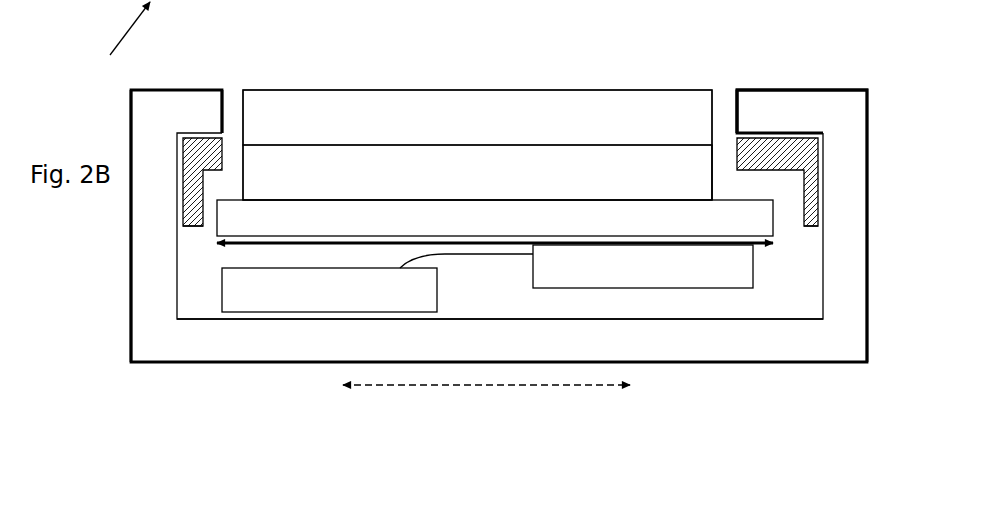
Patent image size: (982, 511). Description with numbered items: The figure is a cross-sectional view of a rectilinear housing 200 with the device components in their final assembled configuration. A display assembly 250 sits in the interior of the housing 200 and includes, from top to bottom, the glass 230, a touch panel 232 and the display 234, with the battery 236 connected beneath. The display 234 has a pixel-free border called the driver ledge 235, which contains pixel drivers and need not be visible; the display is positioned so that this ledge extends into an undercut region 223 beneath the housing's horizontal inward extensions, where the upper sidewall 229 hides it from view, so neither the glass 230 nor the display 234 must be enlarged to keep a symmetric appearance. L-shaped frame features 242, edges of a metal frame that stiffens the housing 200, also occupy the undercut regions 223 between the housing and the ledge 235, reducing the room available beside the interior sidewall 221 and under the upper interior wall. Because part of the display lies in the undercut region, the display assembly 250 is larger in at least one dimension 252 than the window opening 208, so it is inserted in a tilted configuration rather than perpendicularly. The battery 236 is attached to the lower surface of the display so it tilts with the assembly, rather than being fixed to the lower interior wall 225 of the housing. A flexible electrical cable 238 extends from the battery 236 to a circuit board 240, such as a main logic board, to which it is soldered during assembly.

The housing 200 is at (122, 133).
The window opening 208 is at (726, 95).
The interior sidewall 221 is at (128, 200).
The undercut region 223 is at (500, 182).
The lower interior wall 225 is at (650, 317).
The upper sidewall 229 is at (815, 88).
The glass 230 is at (477, 117).
The touch panel 232 is at (477, 172).
The display 234 is at (495, 218).
The driver ledge 235 is at (724, 197).
The battery 236 is at (643, 266).
The flexible electrical cable 238 is at (460, 257).
The circuit board 240 is at (329, 290).
The L-shaped frame feature 242 is at (193, 231).
The display assembly 250 is at (477, 106).
The dimension 252 is at (381, 246).